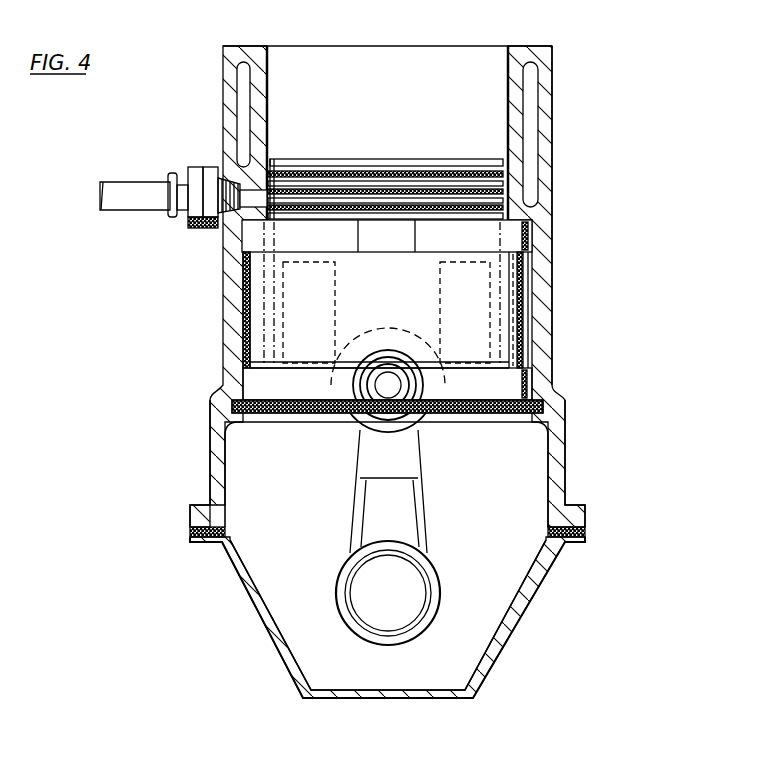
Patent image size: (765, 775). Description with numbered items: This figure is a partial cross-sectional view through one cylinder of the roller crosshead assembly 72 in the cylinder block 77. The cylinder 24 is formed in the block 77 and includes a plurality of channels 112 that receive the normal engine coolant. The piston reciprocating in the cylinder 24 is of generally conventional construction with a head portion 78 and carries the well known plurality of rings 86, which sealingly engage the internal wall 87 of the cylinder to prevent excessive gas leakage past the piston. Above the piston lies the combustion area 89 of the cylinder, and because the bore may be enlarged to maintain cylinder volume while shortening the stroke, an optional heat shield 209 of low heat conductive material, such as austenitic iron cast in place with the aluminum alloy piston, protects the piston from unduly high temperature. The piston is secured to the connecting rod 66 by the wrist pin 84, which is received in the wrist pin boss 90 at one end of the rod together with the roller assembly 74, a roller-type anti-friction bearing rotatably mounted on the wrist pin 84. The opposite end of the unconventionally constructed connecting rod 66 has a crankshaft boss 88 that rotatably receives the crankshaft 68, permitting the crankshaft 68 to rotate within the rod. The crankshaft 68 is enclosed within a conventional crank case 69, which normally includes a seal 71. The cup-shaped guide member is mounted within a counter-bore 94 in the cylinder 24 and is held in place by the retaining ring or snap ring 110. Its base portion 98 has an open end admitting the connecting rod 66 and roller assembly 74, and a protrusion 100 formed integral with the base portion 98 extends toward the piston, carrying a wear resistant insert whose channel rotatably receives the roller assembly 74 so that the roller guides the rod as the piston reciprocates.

The cylinder 24 is at (497, 140).
The connecting rod 66 is at (423, 505).
The crankshaft 68 is at (401, 606).
The crank case 69 is at (500, 640).
The seal 71 is at (583, 535).
The roller crosshead assembly 72 is at (189, 372).
The roller assembly 74 is at (384, 328).
The cylinder block 77 is at (552, 209).
The head portion 78 is at (329, 160).
The wrist pin 84 is at (370, 390).
The rings 86 is at (452, 172).
The internal wall 87 is at (268, 60).
The crankshaft boss 88 is at (442, 580).
The combustion area 89 is at (468, 60).
The wrist pin boss 90 is at (418, 418).
The counter-bore 94 is at (527, 283).
The base portion 98 is at (520, 385).
The protrusion 100 is at (297, 305).
The retaining ring or snap ring 110 is at (262, 413).
The channels 112 is at (532, 88).
The heat shield 209 is at (391, 160).